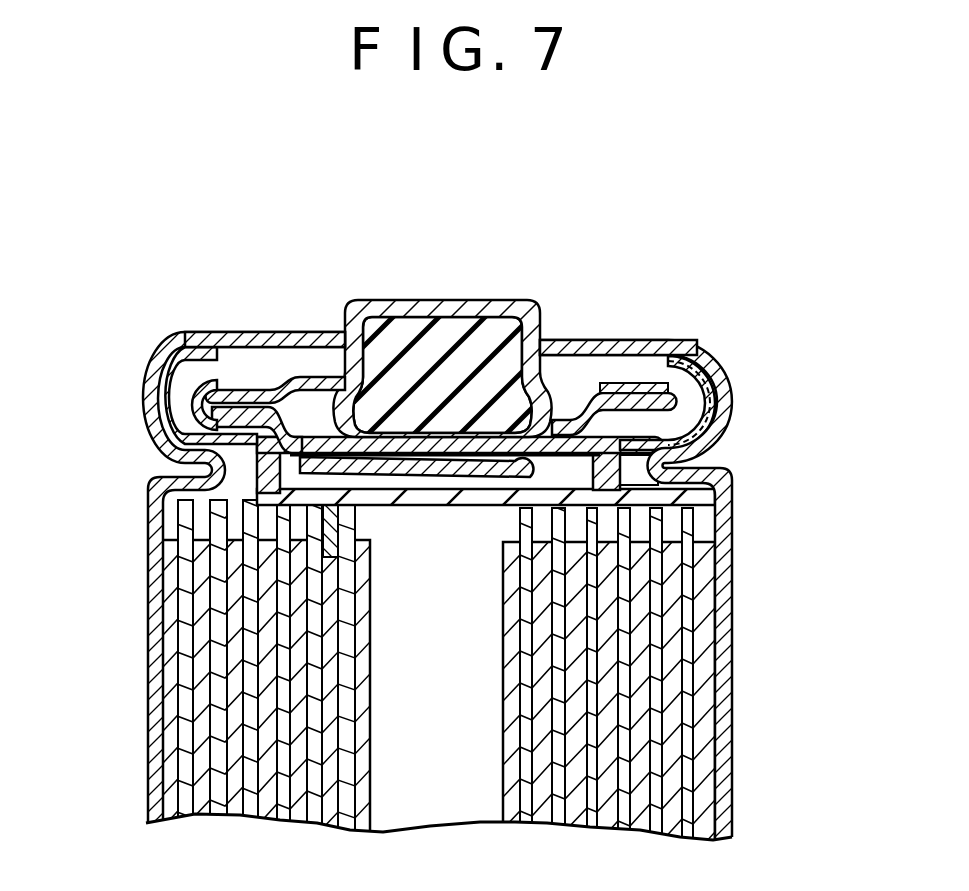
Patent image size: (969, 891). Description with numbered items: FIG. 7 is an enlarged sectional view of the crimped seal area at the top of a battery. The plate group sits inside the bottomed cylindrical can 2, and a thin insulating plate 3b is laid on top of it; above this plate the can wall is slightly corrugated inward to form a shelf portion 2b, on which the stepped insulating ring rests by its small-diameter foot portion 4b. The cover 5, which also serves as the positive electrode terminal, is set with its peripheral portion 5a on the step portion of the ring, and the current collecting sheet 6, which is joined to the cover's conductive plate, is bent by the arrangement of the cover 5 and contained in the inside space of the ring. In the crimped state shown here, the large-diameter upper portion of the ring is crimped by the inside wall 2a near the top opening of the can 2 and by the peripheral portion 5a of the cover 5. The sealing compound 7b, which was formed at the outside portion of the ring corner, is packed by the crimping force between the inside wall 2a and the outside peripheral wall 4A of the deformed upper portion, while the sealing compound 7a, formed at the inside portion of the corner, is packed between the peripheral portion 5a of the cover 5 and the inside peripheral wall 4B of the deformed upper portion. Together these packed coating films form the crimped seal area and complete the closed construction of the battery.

The bottomed cylindrical can 2 is at (722, 608).
The inside wall 2a is at (693, 386).
The shelf portion 2b is at (165, 458).
The insulating plate 3b is at (268, 482).
The outside peripheral wall 4A is at (693, 393).
The inside peripheral wall 4B is at (662, 393).
The small-diameter foot portion 4b is at (210, 487).
The cover 5 is at (397, 286).
The peripheral portion 5a is at (622, 392).
The current collecting sheet 6 is at (455, 435).
The sealing compound 7a is at (718, 452).
The sealing compound 7b is at (712, 426).